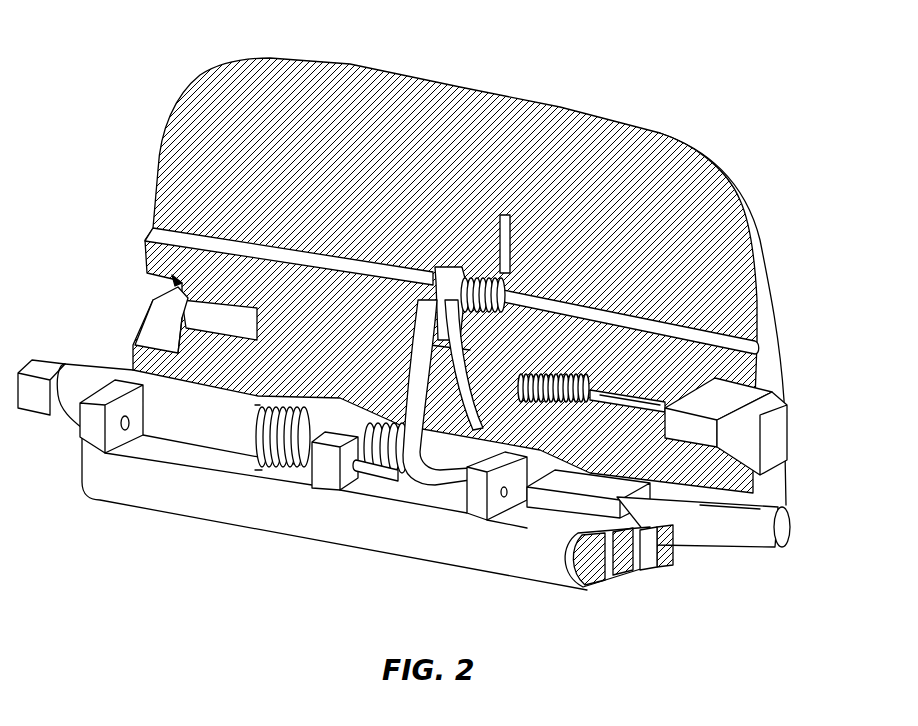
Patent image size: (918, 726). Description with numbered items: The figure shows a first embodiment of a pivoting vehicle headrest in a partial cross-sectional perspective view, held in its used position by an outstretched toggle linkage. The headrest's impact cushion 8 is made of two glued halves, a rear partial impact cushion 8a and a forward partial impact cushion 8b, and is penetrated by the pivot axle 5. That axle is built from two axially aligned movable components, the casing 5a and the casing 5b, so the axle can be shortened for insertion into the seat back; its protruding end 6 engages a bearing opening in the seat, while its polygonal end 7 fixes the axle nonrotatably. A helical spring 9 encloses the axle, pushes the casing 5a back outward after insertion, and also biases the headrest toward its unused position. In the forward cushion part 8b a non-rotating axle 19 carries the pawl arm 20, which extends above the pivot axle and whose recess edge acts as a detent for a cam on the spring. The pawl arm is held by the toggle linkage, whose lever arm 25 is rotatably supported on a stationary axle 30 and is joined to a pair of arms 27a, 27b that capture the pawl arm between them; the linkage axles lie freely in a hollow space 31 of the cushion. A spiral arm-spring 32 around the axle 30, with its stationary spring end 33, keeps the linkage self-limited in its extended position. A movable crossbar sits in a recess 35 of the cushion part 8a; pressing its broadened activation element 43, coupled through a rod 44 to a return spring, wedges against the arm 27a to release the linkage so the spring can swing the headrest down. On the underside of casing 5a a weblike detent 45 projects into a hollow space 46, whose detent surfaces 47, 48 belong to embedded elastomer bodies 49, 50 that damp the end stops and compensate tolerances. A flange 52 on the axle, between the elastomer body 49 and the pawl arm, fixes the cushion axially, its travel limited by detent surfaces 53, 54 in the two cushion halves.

The pivot axle 5 is at (788, 527).
The casing 5a is at (768, 440).
The casing 5b is at (200, 428).
The protruding end 6 is at (757, 530).
The polygonal end 7 is at (42, 362).
The impact cushion 8 is at (762, 245).
The rear partial impact cushion 8a is at (215, 117).
The forward partial impact cushion 8b is at (105, 475).
The helical spring 9 is at (293, 467).
The non-rotating axle 19 is at (360, 473).
The pawl arm 20 is at (380, 470).
The lever arm 25 is at (473, 277).
The arm 27a is at (420, 458).
The arm 27b is at (300, 450).
The axle 30 is at (445, 285).
The hollow space 31 is at (418, 310).
The spiral arm-spring 32 is at (503, 273).
The spring end 33 is at (527, 405).
The recess 35 is at (757, 340).
The activation element 43 is at (740, 408).
The rod 44 is at (687, 405).
The detent 45 is at (648, 548).
The hollow space 46 is at (537, 503).
The detent surface 47 is at (530, 522).
The detent surface 48 is at (637, 505).
The elastomer body 49 is at (660, 553).
The elastomer body 50 is at (673, 543).
The flange 52 is at (490, 513).
The detent surface 53 is at (587, 378).
The detent surface 54 is at (623, 398).